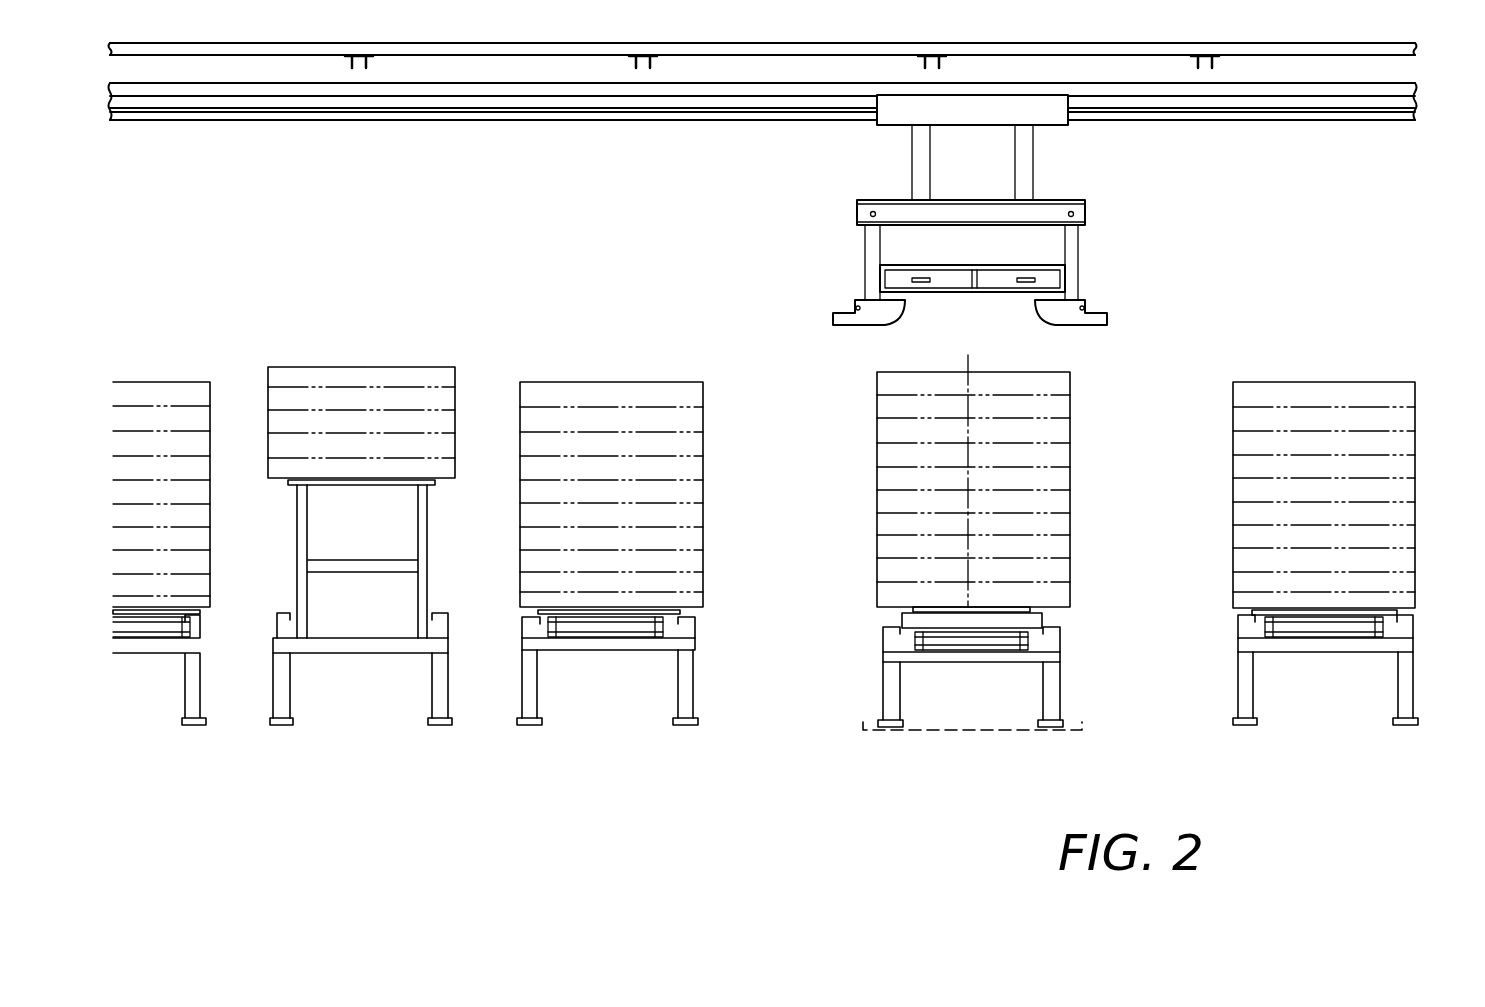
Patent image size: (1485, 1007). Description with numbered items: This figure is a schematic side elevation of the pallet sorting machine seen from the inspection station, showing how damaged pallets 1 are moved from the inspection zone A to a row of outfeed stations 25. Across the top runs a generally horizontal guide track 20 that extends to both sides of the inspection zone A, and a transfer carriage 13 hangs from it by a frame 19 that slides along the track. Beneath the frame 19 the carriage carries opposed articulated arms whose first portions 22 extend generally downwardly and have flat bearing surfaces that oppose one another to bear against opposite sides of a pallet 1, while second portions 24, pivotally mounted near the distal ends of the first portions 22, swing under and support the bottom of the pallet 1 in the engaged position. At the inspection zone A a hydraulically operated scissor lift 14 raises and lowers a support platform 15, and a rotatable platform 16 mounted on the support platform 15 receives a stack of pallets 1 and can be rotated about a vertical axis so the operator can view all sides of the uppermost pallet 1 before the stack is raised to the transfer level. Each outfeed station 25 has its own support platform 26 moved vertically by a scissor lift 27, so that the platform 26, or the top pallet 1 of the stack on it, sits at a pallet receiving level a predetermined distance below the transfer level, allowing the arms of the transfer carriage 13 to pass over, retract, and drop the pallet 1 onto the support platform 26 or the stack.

The pallet 1 is at (400, 378).
The transfer carriage 13 is at (1003, 245).
The scissor lift 14 is at (978, 640).
The support platform 15 is at (1037, 608).
The rotatable platform 16 is at (1007, 607).
The frame 19 is at (1052, 215).
The guide track 20 is at (1257, 102).
The first portion 22 is at (868, 242).
The second portion 24 is at (877, 325).
The outfeed station 25 is at (363, 677).
The support platform 26 is at (288, 483).
The scissor lift 27 is at (305, 545).
The inspection zone A is at (975, 732).